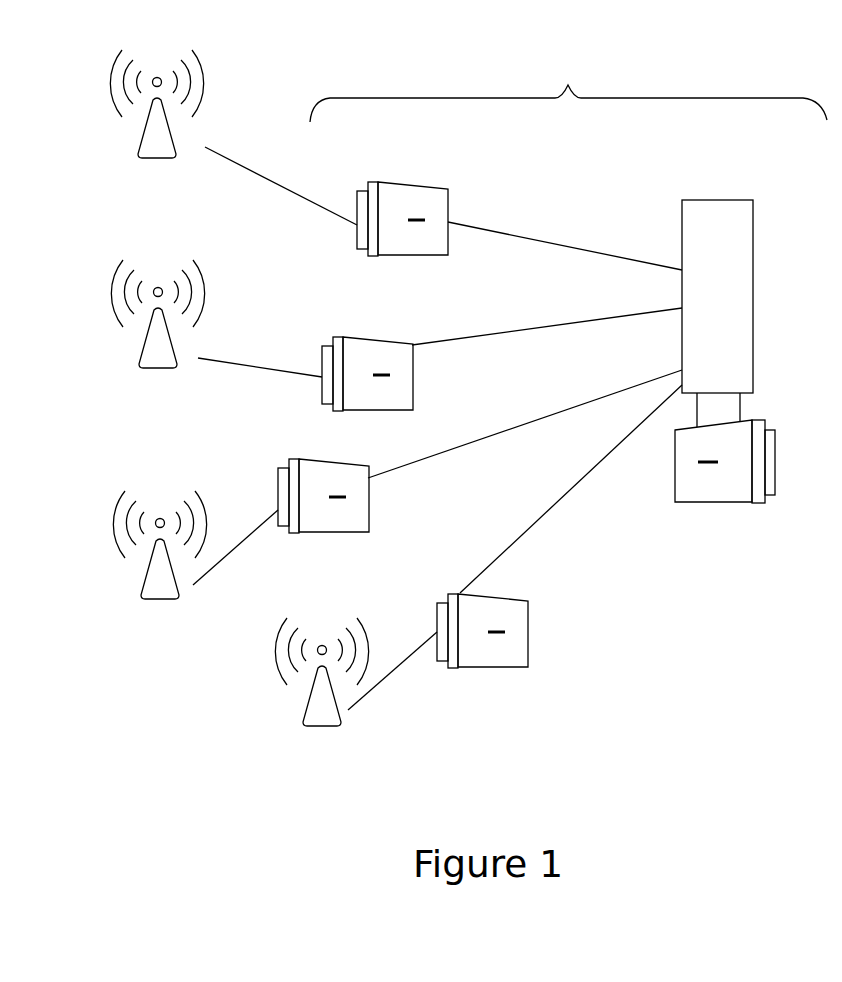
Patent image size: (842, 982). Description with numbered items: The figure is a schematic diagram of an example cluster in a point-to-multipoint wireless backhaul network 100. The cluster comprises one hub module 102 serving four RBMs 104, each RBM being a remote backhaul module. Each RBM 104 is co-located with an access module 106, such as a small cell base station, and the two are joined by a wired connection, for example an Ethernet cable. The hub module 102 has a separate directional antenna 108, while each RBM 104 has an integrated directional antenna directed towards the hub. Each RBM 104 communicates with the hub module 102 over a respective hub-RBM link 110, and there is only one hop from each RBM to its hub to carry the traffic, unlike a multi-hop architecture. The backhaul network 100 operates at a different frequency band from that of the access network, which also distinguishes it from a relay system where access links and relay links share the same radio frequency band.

The point-to-multipoint wireless backhaul network 100 is at (568, 83).
The hub module 102 is at (775, 463).
The remote backhaul module 104 is at (412, 185).
The access module 106 is at (143, 127).
The directional antenna 108 is at (753, 287).
The hub-RBM link 110 is at (633, 258).